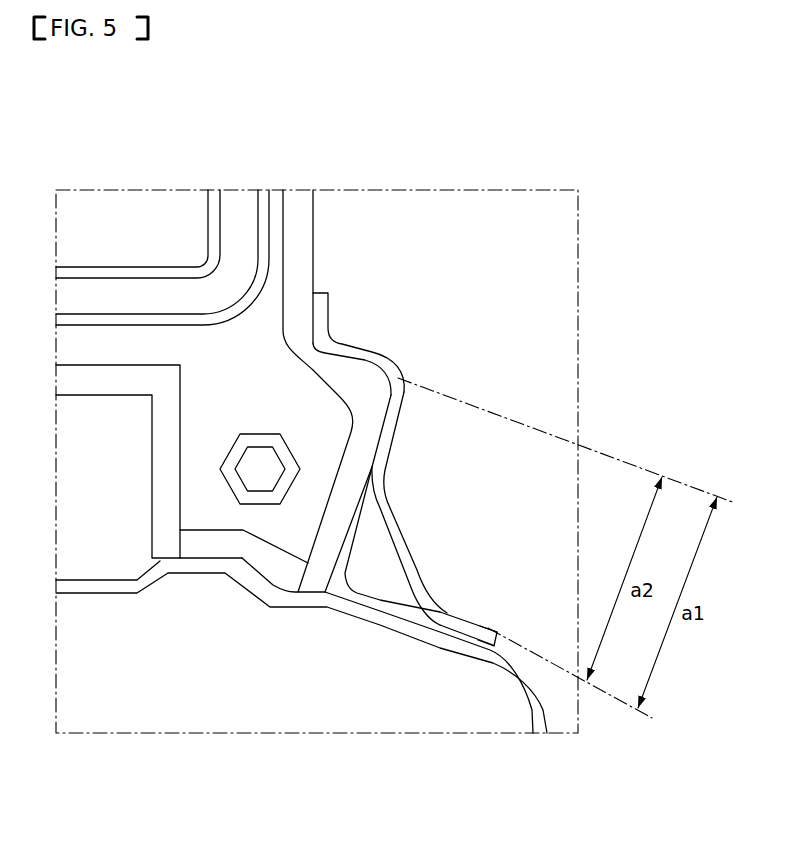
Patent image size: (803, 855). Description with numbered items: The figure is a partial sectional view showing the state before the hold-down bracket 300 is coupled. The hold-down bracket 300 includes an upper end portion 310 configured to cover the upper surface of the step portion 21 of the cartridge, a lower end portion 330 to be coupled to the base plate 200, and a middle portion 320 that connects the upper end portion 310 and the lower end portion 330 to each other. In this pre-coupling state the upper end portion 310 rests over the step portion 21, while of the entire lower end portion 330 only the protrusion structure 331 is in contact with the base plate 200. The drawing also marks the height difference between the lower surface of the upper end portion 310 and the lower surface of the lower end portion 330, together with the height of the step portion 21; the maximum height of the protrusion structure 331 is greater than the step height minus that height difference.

The step portion 21 is at (335, 373).
The base plate 200 is at (358, 613).
The hold-down bracket 300 is at (660, 282).
The upper end portion 310 is at (357, 365).
The middle portion 320 is at (413, 555).
The lower end portion 330 is at (475, 622).
The protrusion structure 331 is at (473, 637).